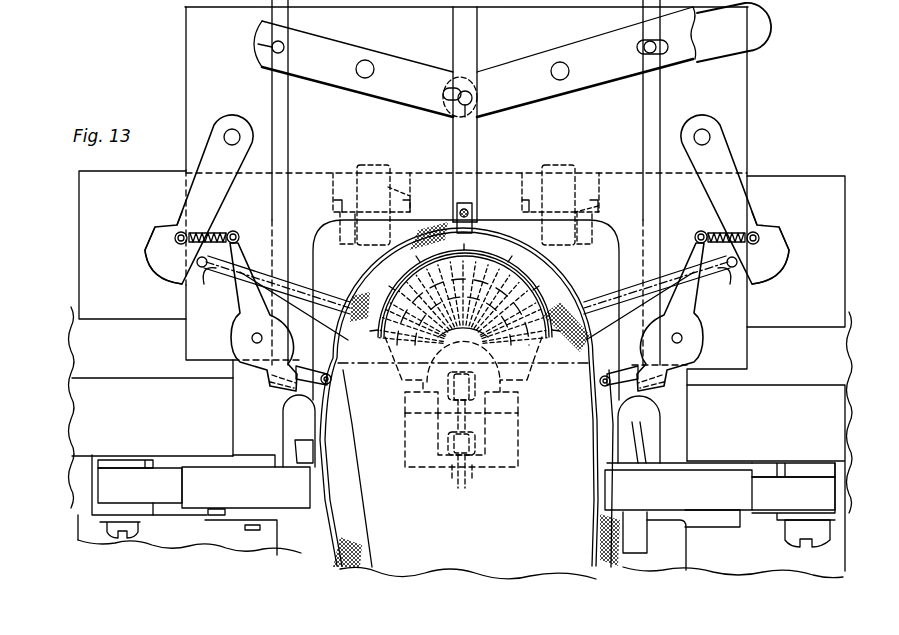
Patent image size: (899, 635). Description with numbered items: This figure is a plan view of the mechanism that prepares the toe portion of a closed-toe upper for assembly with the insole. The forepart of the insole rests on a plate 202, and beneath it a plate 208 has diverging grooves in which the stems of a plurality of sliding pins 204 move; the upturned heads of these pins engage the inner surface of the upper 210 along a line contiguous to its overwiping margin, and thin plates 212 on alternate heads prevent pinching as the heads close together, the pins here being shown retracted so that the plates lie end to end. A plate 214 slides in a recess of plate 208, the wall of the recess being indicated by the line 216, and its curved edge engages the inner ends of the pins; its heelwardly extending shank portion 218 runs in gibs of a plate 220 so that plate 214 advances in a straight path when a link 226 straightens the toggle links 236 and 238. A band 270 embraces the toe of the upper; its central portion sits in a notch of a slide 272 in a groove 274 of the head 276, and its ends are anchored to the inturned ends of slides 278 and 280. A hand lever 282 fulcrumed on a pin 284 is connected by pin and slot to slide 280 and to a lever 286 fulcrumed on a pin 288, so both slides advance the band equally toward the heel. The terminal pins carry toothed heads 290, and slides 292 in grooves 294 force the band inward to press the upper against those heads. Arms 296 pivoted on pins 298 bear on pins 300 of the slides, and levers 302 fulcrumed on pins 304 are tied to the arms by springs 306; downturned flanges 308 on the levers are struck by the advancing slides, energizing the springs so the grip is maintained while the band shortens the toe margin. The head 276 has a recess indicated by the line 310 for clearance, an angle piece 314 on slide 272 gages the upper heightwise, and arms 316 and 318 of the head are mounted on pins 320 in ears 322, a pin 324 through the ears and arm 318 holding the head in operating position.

The plate 202 is at (517, 574).
The sliding pins 204 is at (451, 357).
The plate 208 is at (557, 383).
The upper 210 is at (548, 270).
The thin plates 212 is at (440, 252).
The plate 214 is at (492, 370).
The line 216 is at (366, 400).
The shank portion 218 is at (487, 433).
The plate 220 is at (407, 452).
The link 226 is at (449, 479).
The toggle link 236 is at (474, 480).
The toggle link 238 is at (452, 416).
The band 270 is at (476, 192).
The slide 272 is at (471, 138).
The groove 274 is at (480, 40).
The head 276 is at (749, 88).
The slide 278 is at (279, 110).
The slide 280 is at (646, 103).
The hand lever 282 is at (771, 26).
The pin 284 is at (562, 62).
The lever 286 is at (418, 72).
The pin 288 is at (366, 60).
The toothed heads 290 is at (380, 333).
The slides 292 is at (158, 241).
The grooves 294 is at (209, 286).
The arms 296 is at (176, 222).
The pins 298 is at (231, 129).
The pins 300 is at (197, 261).
The levers 302 is at (242, 350).
The pins 304 is at (251, 339).
The springs 306 is at (205, 212).
The downturned flanges 308 is at (276, 388).
The line 310 is at (314, 243).
The angle piece 314 is at (455, 210).
The arm 316 is at (390, 186).
The arm 318 is at (586, 186).
The pins 320 is at (332, 210).
The ears 322 is at (392, 172).
The pin 324 is at (600, 206).